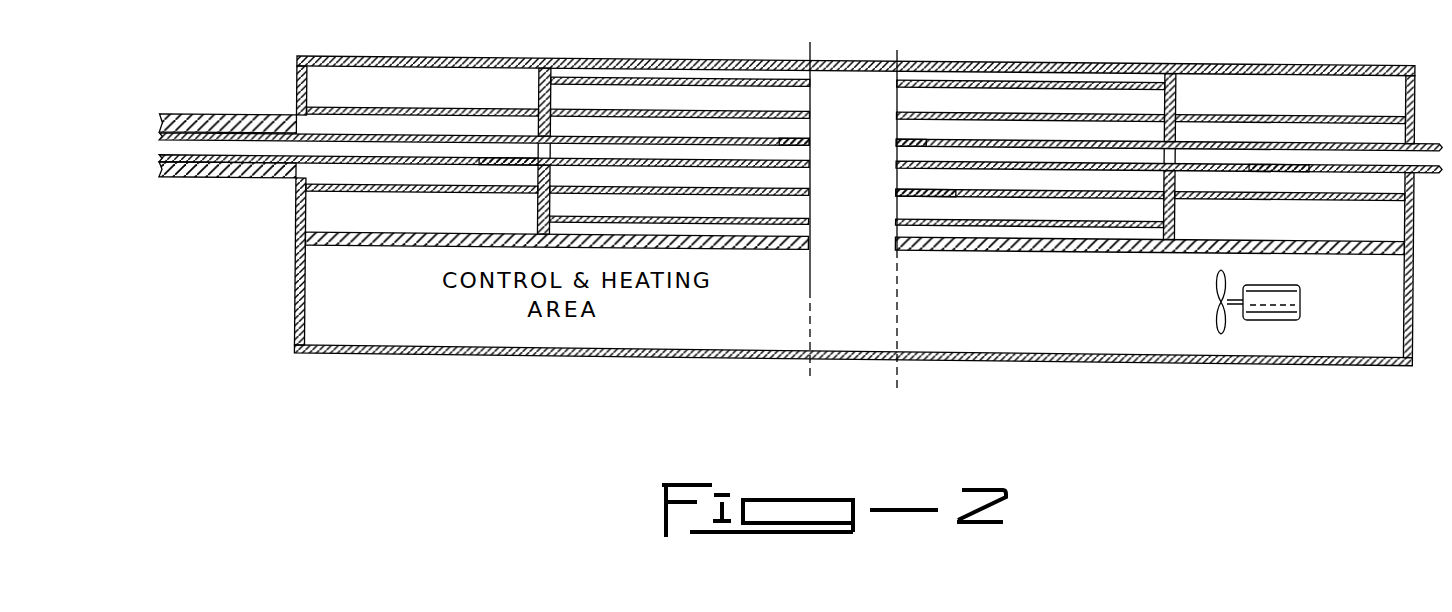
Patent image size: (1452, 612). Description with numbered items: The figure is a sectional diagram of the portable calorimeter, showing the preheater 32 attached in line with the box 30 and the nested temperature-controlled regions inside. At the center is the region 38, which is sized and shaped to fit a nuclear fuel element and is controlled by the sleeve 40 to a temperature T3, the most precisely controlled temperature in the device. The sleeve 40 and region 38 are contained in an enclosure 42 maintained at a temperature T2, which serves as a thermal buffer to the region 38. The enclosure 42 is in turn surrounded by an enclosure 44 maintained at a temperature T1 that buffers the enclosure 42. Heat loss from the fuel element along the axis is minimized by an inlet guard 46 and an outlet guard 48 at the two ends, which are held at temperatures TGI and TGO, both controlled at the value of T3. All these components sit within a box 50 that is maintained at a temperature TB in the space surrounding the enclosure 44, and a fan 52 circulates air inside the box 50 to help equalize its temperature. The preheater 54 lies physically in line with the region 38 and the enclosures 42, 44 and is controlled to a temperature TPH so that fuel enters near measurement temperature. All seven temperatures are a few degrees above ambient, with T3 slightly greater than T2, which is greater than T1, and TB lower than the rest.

The box 30 is at (687, 364).
The preheater 32 is at (277, 196).
The region 38 is at (915, 153).
The sleeve 40 is at (925, 168).
The enclosure 42 is at (1031, 192).
The enclosure 44 is at (1004, 85).
The inlet guard 46 is at (476, 133).
The outlet guard 48 is at (1297, 147).
The box 50 is at (475, 63).
The fan 52 is at (1300, 300).
The preheater 54 is at (216, 130).
The box temperature TB is at (668, 80).
The preheater temperature TPH is at (247, 170).
The inlet guard temperature TGI is at (507, 169).
The outlet guard temperature TGO is at (1288, 176).
The enclosure 44 temperature T1 is at (900, 222).
The enclosure 42 temperature T2 is at (912, 202).
The region 38 temperature T3 is at (901, 135).